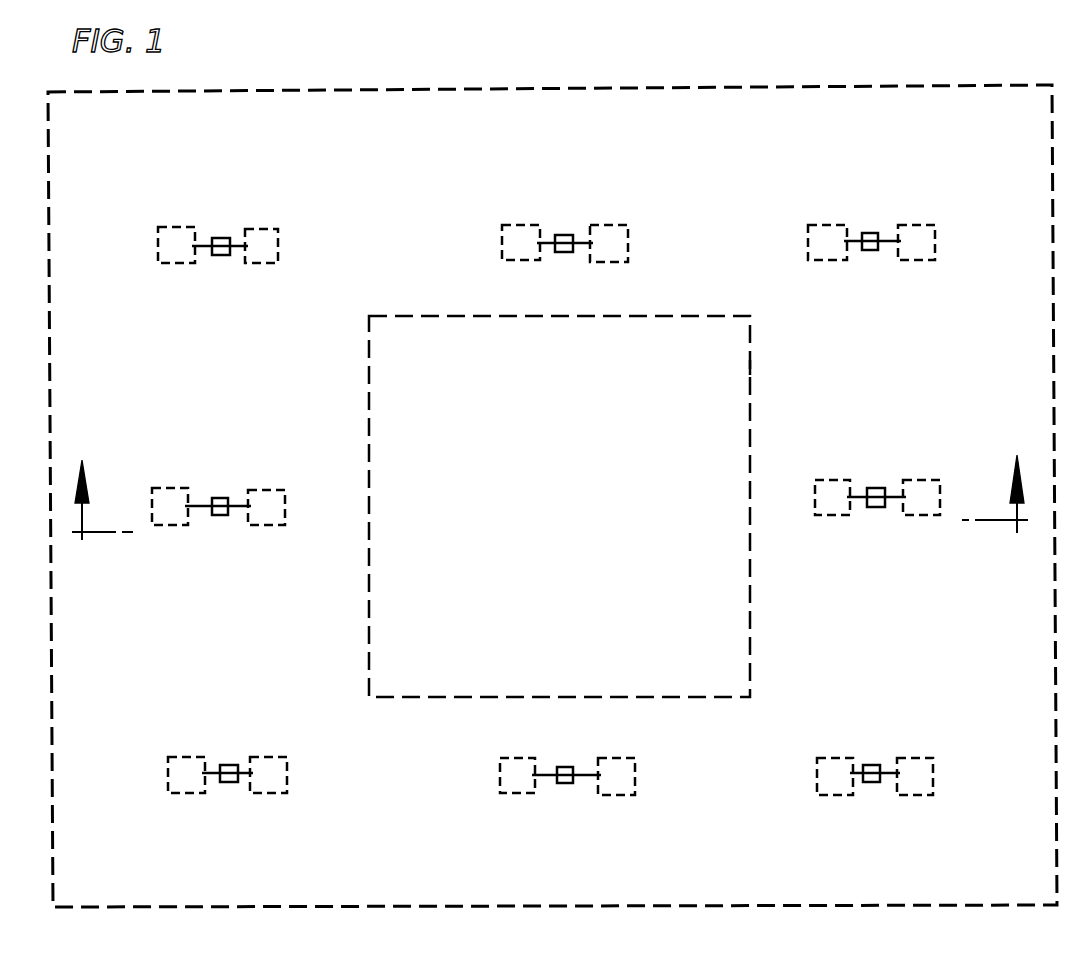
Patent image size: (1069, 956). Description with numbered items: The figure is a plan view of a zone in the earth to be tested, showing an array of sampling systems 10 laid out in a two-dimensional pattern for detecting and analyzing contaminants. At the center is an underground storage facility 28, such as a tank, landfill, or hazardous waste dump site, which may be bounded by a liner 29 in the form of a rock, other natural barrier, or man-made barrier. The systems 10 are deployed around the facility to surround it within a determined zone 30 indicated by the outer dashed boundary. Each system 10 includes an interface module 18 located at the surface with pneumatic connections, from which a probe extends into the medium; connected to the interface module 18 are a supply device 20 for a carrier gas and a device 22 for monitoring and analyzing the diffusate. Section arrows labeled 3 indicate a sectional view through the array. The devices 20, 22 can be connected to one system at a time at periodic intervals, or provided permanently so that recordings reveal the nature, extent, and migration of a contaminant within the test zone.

The system 10 is at (542, 465).
The interface module 18 is at (221, 238).
The supply device 20 is at (158, 228).
The monitoring device 22 is at (268, 229).
The underground storage facility 28 is at (570, 505).
The liner 29 is at (752, 368).
The determined zone 30 is at (874, 106).
The section line 3- 3 is at (553, 517).